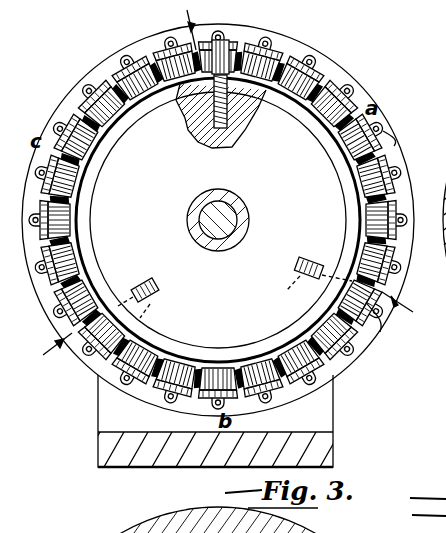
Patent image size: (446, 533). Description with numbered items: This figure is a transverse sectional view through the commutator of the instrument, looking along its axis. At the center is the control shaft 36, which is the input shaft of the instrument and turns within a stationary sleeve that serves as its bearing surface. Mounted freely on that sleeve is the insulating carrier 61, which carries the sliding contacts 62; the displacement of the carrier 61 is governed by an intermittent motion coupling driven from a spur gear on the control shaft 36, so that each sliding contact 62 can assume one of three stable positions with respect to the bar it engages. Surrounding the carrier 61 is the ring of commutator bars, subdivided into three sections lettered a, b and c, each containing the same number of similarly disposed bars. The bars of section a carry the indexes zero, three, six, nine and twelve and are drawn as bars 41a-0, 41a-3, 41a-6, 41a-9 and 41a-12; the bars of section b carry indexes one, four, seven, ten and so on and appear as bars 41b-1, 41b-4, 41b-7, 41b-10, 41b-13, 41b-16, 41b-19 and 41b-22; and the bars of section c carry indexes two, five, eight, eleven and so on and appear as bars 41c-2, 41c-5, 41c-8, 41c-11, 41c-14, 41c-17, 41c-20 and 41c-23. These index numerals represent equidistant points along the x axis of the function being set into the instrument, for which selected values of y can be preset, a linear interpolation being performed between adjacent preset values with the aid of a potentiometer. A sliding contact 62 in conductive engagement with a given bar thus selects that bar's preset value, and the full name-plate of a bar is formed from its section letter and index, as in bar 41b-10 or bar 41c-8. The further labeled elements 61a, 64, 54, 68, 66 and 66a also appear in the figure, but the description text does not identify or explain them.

The control shaft 36 is at (226, 217).
The insulating carrier 61 is at (306, 165).
The hub 61a is at (230, 203).
The sliding contact 62 is at (197, 115).
The screw 64 is at (190, 130).
The base 54 is at (333, 440).
The terminal lug 68 is at (388, 241).
The rotor 66 is at (437, 220).
The rotor magnet 66a is at (202, 532).
The commutator bar 41a-0 is at (228, 44).
The commutator bar 41a-3 is at (268, 64).
The commutator bar 41a-6 is at (312, 90).
The commutator bar 41a-9 is at (336, 102).
The commutator bar 41a-12 is at (362, 168).
The commutator bar 41b-1 is at (345, 292).
The commutator bar 41b-4 is at (325, 318).
The commutator bar 41b-7 is at (302, 355).
The commutator bar 41b-10 is at (276, 390).
The commutator bar 41b-13 is at (230, 362).
The commutator bar 41b-16 is at (187, 368).
The commutator bar 41b-19 is at (143, 350).
The commutator bar 41b-22 is at (88, 338).
The commutator bar 41c-2 is at (80, 302).
The commutator bar 41c-5 is at (72, 254).
The commutator bar 41c-8 is at (68, 223).
The commutator bar 41c-11 is at (72, 178).
The commutator bar 41c-14 is at (88, 142).
The commutator bar 41c-17 is at (100, 100).
The commutator bar 41c-20 is at (122, 75).
The commutator bar 41c-23 is at (165, 52).